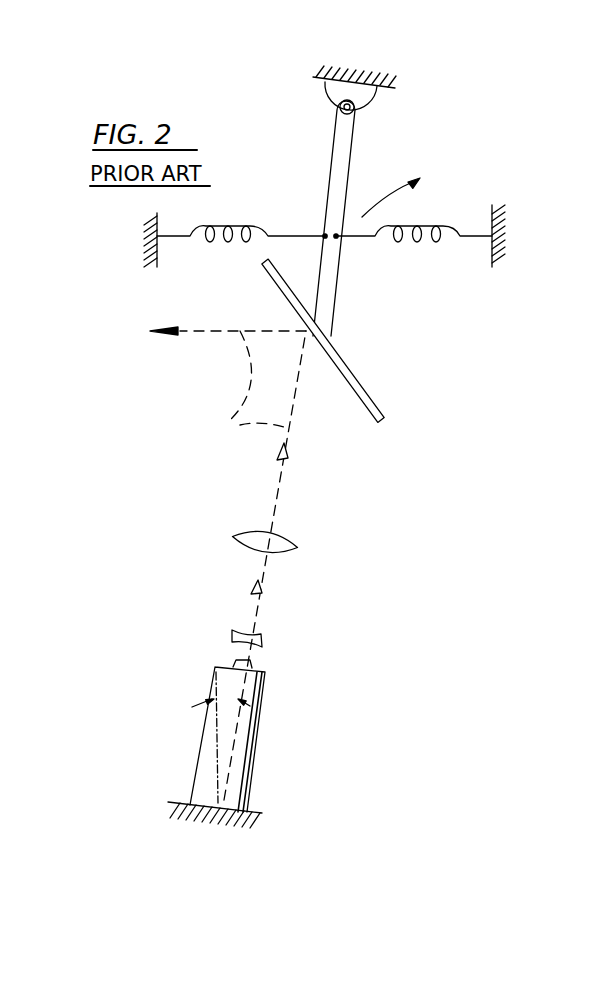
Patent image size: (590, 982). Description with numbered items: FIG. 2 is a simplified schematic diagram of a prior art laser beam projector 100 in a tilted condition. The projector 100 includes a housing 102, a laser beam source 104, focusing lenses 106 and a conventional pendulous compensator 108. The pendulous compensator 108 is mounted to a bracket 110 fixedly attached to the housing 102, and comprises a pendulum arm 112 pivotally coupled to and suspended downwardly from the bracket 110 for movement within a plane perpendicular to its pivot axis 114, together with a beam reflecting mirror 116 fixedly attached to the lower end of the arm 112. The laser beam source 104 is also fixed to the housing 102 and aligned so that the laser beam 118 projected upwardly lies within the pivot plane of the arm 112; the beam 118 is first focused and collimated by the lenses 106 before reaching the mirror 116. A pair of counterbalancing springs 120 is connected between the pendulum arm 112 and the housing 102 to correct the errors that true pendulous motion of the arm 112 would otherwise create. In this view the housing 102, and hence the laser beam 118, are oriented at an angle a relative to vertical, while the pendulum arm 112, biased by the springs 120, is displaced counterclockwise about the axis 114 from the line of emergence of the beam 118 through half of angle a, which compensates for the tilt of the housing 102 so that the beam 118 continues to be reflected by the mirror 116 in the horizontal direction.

The laser beam projector 100 is at (453, 192).
The housing 102 is at (372, 74).
The laser beam source 104 is at (255, 742).
The focusing lenses 106 is at (297, 552).
The pendulous compensator 108 is at (388, 331).
The bracket 110 is at (377, 105).
The pendulum arm 112 is at (333, 163).
The pivot axis 114 is at (338, 108).
The beam reflecting mirror 116 is at (380, 413).
The laser beam 118 is at (237, 424).
The counterbalancing springs 120 is at (210, 240).
The angle a is at (222, 693).